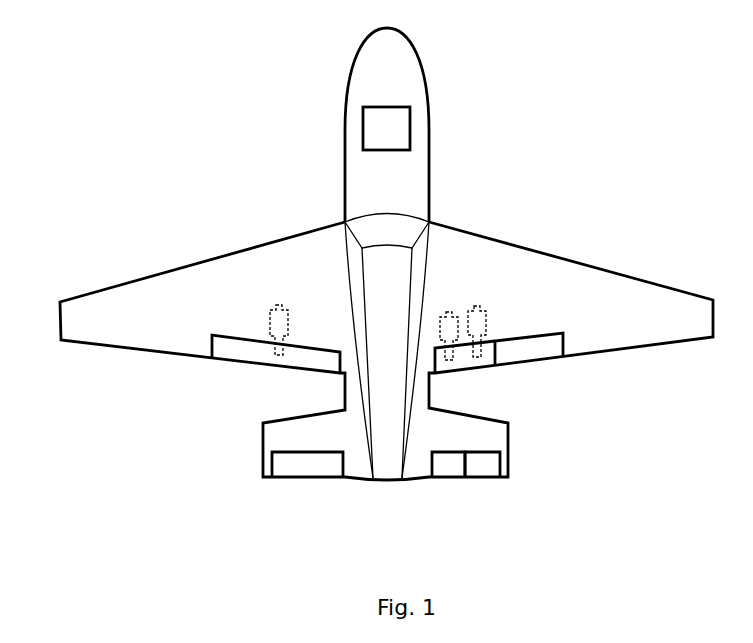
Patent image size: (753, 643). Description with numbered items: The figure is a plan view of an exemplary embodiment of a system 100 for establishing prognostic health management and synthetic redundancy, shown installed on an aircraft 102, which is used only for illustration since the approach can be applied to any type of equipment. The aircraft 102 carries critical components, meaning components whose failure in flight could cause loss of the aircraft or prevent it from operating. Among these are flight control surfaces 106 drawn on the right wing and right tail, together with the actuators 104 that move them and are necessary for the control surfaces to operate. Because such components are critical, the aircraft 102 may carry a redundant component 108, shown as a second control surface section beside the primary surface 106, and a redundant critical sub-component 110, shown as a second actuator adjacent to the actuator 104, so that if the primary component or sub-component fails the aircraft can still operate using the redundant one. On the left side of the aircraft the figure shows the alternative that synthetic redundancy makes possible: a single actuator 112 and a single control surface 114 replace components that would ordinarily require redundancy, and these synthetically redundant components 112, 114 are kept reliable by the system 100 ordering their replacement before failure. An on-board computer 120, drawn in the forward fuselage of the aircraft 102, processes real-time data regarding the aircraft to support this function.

The system for establishing prognostic health management and synthetic redundancy 100 is at (147, 104).
The aircraft 102 is at (428, 147).
The actuator 104 is at (449, 311).
The flight control surface 106 is at (545, 361).
The redundant component 108 is at (470, 374).
The redundant critical sub-component 110 is at (480, 306).
The synthetically redundant component 112 is at (273, 343).
The synthetically redundant component 114 is at (308, 478).
The on-board computer 120 is at (362, 128).